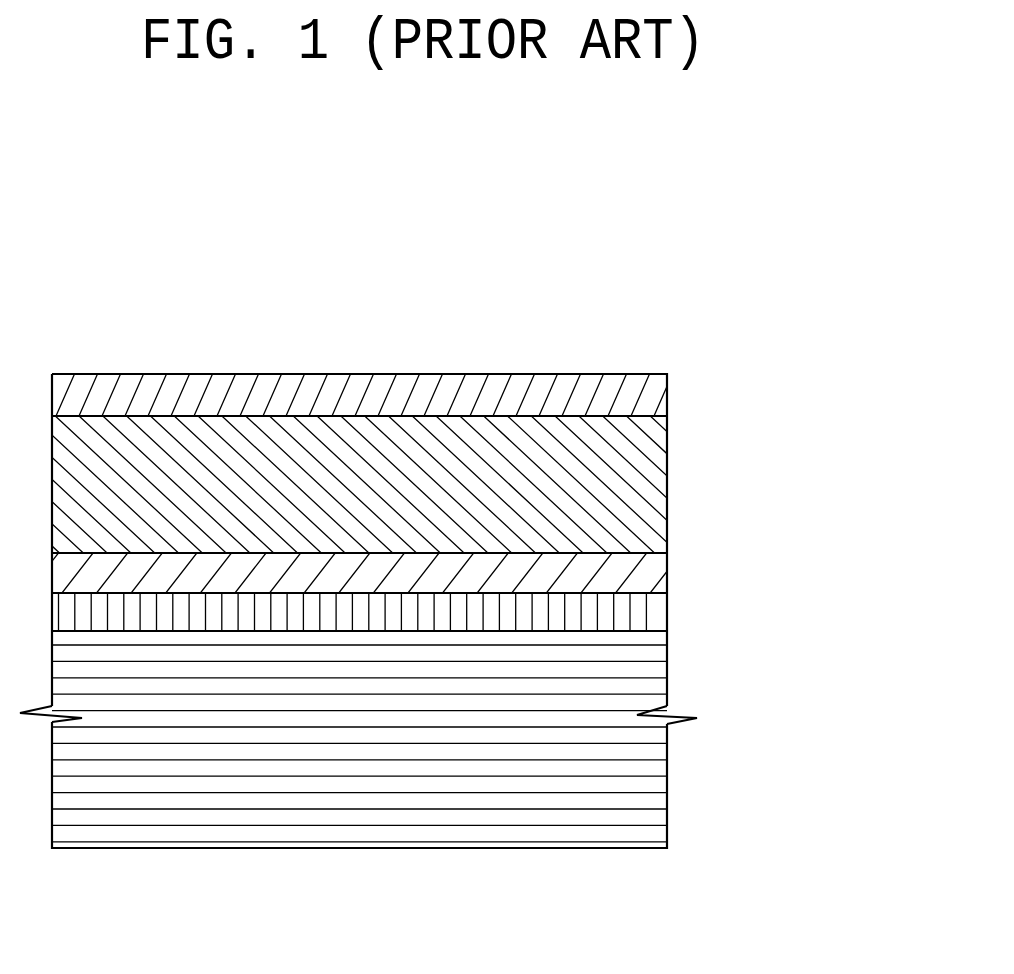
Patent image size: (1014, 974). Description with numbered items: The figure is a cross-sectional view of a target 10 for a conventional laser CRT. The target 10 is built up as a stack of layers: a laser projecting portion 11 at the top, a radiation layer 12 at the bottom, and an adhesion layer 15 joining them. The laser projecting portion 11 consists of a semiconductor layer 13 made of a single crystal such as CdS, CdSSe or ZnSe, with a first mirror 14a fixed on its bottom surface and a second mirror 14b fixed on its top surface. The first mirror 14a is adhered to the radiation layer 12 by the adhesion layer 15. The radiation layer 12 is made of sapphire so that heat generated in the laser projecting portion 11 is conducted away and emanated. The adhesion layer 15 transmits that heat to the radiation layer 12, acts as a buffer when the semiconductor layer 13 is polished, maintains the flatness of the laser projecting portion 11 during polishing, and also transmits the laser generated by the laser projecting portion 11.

The target 10 is at (581, 333).
The laser projecting portion 11 is at (812, 402).
The radiation layer 12 is at (655, 755).
The semiconductor layer 13 is at (655, 486).
The first mirror 14a is at (655, 577).
The second mirror 14b is at (667, 399).
The adhesion layer 15 is at (655, 615).